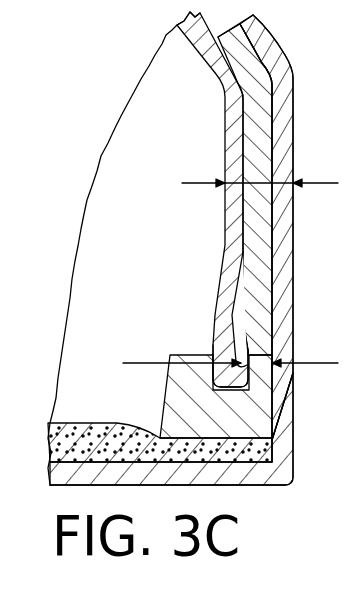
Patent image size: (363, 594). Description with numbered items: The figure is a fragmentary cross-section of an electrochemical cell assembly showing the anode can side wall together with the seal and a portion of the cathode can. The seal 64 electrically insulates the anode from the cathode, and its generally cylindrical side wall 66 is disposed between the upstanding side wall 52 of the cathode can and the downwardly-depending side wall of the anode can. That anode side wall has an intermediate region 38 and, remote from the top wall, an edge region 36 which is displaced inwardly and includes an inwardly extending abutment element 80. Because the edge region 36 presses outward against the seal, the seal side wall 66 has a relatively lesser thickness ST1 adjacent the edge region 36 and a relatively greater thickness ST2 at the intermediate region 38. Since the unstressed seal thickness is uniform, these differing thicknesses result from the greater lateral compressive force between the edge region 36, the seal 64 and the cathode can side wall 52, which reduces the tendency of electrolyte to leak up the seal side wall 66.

The edge region 36 is at (213, 350).
The intermediate region 38 is at (224, 216).
The side wall 52 is at (296, 262).
The seal 64 is at (277, 115).
The side wall 66 is at (276, 160).
The abutment element 80 is at (215, 290).
The thickness ST1 is at (200, 365).
The thickness ST2 is at (230, 186).